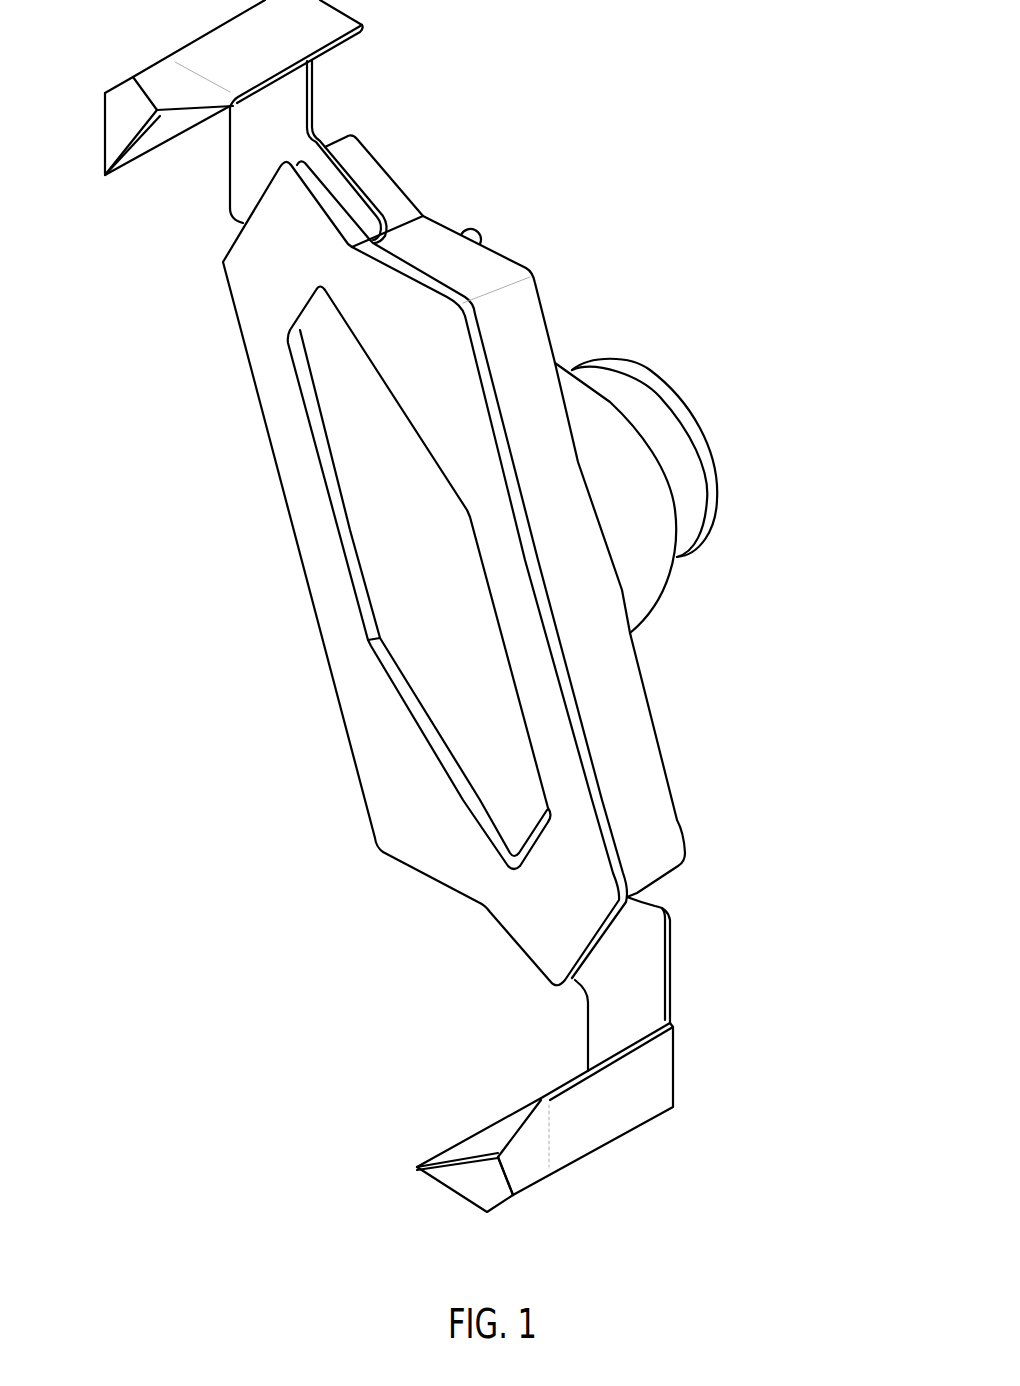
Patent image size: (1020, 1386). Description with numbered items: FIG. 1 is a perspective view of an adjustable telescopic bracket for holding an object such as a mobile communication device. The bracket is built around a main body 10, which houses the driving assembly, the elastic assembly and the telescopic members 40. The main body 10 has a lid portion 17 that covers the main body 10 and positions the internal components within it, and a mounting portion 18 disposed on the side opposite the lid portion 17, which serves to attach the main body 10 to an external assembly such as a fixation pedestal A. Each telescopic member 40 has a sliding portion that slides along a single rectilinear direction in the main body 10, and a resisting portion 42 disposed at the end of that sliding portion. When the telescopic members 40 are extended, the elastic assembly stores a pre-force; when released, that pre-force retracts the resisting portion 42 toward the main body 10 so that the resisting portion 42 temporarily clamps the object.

The main body 10 is at (643, 787).
The lid portion 17 is at (385, 772).
The mounting portion 18 is at (652, 595).
The fixation pedestal A is at (680, 453).
The telescopic member 40 is at (282, 143).
The resisting portion 42 is at (163, 88).